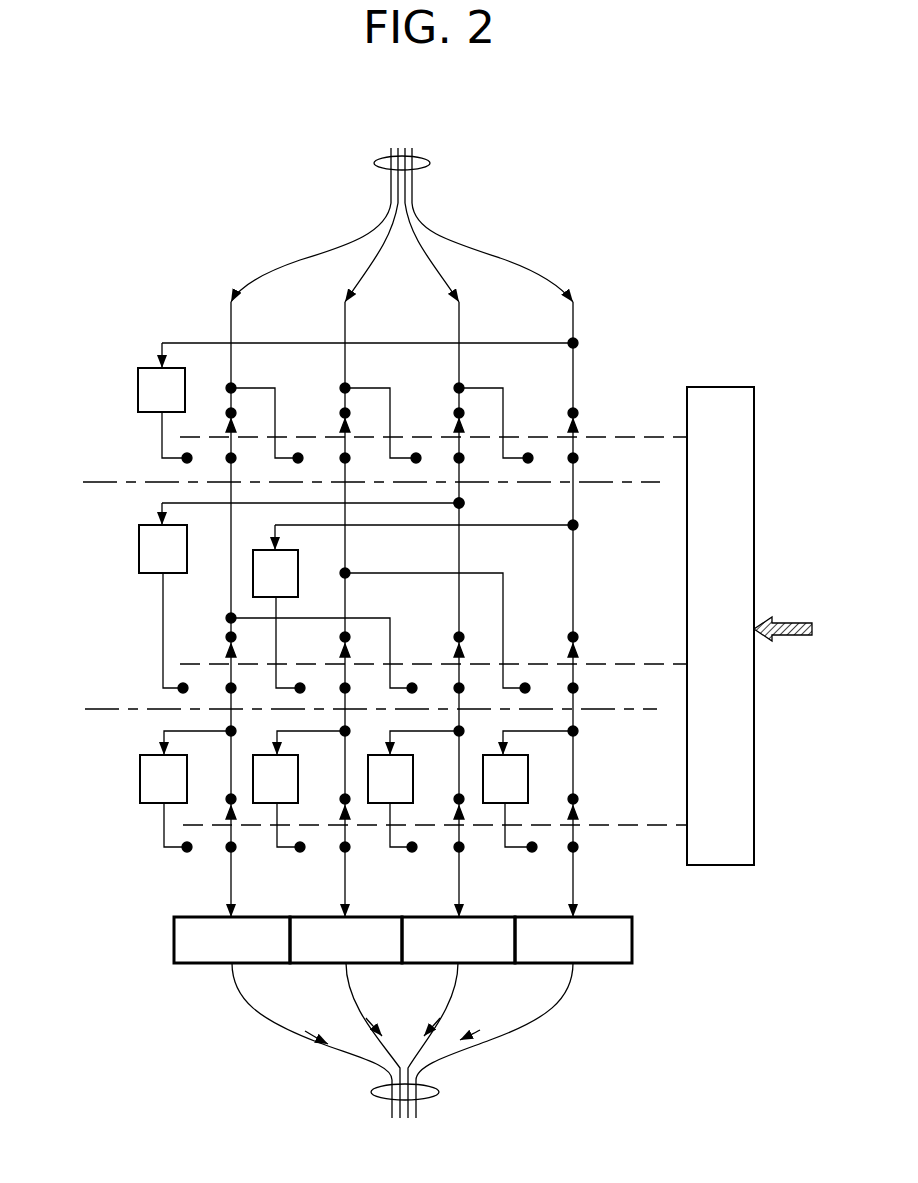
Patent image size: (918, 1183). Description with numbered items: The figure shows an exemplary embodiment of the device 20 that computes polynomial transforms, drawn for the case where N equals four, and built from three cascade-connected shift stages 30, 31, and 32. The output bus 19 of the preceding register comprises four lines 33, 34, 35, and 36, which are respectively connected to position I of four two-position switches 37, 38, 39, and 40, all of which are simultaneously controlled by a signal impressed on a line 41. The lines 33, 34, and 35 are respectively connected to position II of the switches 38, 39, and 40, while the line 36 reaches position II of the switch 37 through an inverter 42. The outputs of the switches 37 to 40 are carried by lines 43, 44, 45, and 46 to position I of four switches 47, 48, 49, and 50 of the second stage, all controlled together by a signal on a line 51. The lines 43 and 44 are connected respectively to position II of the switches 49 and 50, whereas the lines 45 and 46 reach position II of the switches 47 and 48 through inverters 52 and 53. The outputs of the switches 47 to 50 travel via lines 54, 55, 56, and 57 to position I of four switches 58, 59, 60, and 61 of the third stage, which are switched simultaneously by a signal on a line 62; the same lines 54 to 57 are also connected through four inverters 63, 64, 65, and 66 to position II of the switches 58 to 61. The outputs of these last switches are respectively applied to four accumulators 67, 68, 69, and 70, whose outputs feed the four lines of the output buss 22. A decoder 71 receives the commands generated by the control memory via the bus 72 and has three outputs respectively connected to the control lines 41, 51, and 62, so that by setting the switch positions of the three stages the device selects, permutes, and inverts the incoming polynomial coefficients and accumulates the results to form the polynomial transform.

The output bus 19 is at (428, 167).
The device 20 is at (553, 185).
The buss 22 is at (440, 1088).
The shift stage 30 is at (120, 440).
The shift stage 31 is at (105, 655).
The shift stage 32 is at (138, 840).
The line 33 is at (290, 258).
The line 34 is at (363, 268).
The line 35 is at (431, 262).
The line 36 is at (515, 268).
The two-position switch 37 is at (232, 449).
The two-position switch 38 is at (346, 449).
The two-position switch 39 is at (460, 449).
The two-position switch 40 is at (578, 450).
The line 41 is at (650, 437).
The inverter 42 is at (148, 366).
The line 43 is at (191, 524).
The line 44 is at (346, 497).
The line 45 is at (463, 504).
The line 46 is at (577, 512).
The switch 47 is at (232, 680).
The switch 48 is at (346, 680).
The switch 49 is at (460, 680).
The switch 50 is at (578, 680).
The line 51 is at (655, 664).
The inverter 52 is at (139, 545).
The inverter 53 is at (298, 580).
The line 54 is at (232, 726).
The line 55 is at (346, 726).
The line 56 is at (460, 726).
The line 57 is at (580, 723).
The switch 58 is at (232, 839).
The switch 59 is at (346, 839).
The switch 60 is at (460, 839).
The switch 61 is at (578, 843).
The line 62 is at (626, 825).
The inverter 63 is at (140, 776).
The inverter 64 is at (298, 778).
The inverter 65 is at (413, 773).
The inverter 66 is at (528, 773).
The accumulator 67 is at (200, 917).
The accumulator 68 is at (310, 917).
The accumulator 69 is at (432, 917).
The accumulator 70 is at (548, 917).
The decoder 71 is at (705, 387).
The bus 72 is at (786, 616).